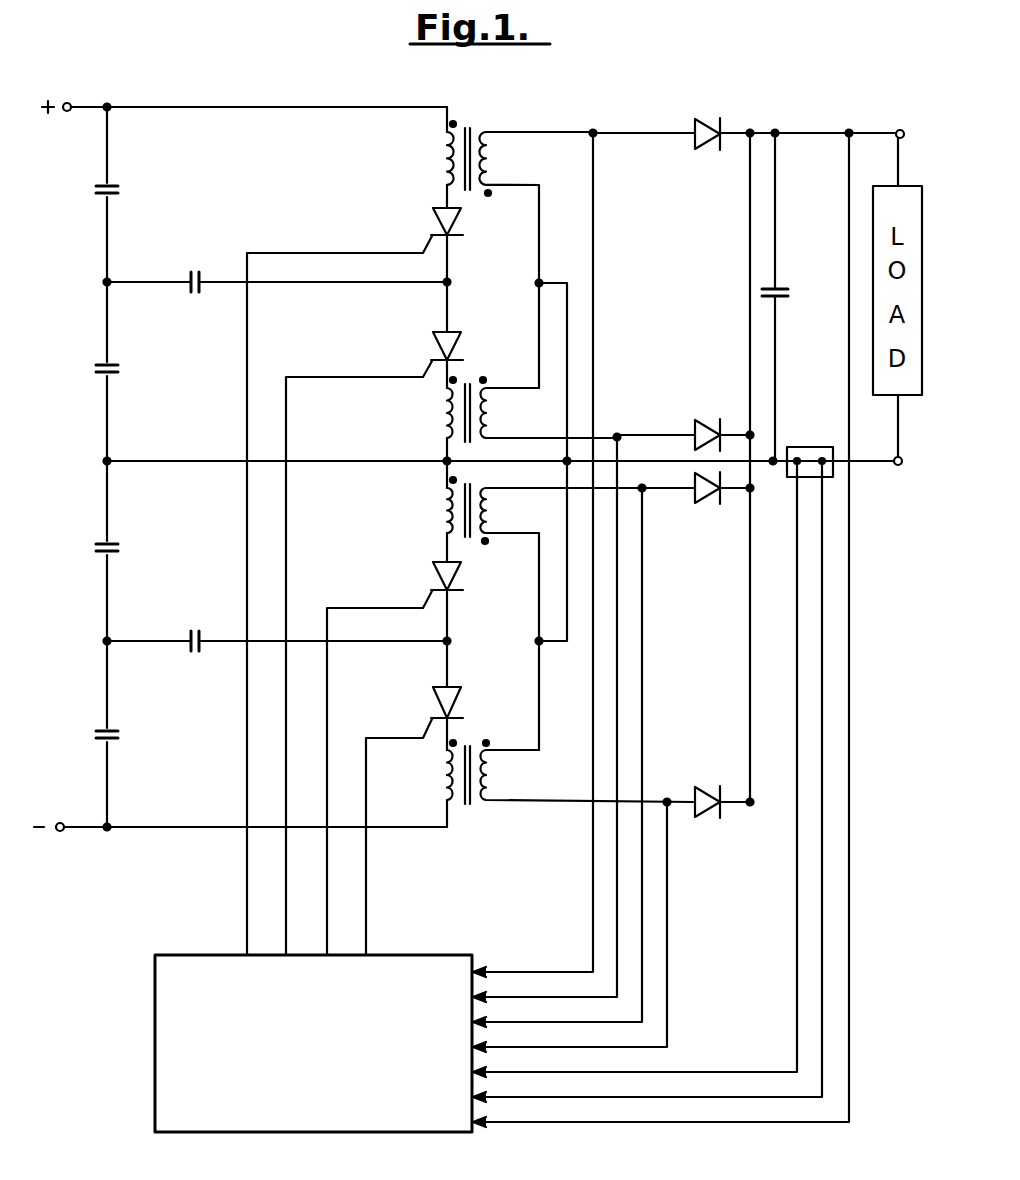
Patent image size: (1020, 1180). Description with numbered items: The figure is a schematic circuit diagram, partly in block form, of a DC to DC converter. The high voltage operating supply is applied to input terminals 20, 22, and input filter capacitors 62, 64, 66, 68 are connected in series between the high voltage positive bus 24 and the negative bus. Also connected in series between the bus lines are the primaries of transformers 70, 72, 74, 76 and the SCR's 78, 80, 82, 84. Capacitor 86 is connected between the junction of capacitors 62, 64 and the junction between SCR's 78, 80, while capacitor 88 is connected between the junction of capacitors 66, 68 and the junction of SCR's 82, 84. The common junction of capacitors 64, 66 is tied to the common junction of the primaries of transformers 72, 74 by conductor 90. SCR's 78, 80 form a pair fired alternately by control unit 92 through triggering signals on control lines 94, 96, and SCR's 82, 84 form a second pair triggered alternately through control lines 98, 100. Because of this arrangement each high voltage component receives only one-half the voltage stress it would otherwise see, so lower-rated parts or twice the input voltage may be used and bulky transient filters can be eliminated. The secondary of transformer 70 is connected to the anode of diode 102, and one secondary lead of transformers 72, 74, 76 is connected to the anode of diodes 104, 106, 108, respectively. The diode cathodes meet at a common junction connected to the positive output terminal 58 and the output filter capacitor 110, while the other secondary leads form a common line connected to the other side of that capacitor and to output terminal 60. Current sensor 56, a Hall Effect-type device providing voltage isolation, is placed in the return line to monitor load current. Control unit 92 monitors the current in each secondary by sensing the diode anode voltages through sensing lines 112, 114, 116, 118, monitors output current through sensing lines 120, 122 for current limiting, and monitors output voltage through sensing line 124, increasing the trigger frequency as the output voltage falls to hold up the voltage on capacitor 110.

The input terminal 20 is at (69, 103).
The input terminal 22 is at (63, 822).
The high voltage positive bus 24 is at (272, 106).
The current sensor 56 is at (810, 446).
The positive output terminal 58 is at (902, 130).
The output terminal 60 is at (898, 466).
The input filter capacitor 62 is at (121, 190).
The input filter capacitor 64 is at (131, 371).
The input filter capacitor 66 is at (121, 550).
The input filter capacitor 68 is at (120, 736).
The transformer 70 is at (432, 163).
The transformer 72 is at (433, 427).
The transformer 74 is at (433, 513).
The transformer 76 is at (433, 782).
The SCR 78 is at (420, 226).
The SCR 80 is at (422, 350).
The SCR 82 is at (421, 577).
The SCR 84 is at (420, 707).
The capacitor 86 is at (200, 271).
The capacitor 88 is at (202, 632).
The conductor 90 is at (230, 460).
The control unit 92 is at (168, 1012).
The control line 94 is at (330, 252).
The control line 96 is at (368, 378).
The control line 98 is at (327, 708).
The control line 100 is at (372, 722).
The diode 102 is at (705, 118).
The diode 104 is at (703, 419).
The diode 106 is at (703, 504).
The diode 108 is at (703, 788).
The output filter capacitor 110 is at (788, 291).
The sensing line 112 is at (545, 970).
The sensing line 114 is at (557, 995).
The sensing line 116 is at (559, 1020).
The sensing line 118 is at (561, 1046).
The sensing line 120 is at (563, 1071).
The sensing line 122 is at (567, 1096).
The sensing line 124 is at (573, 1121).